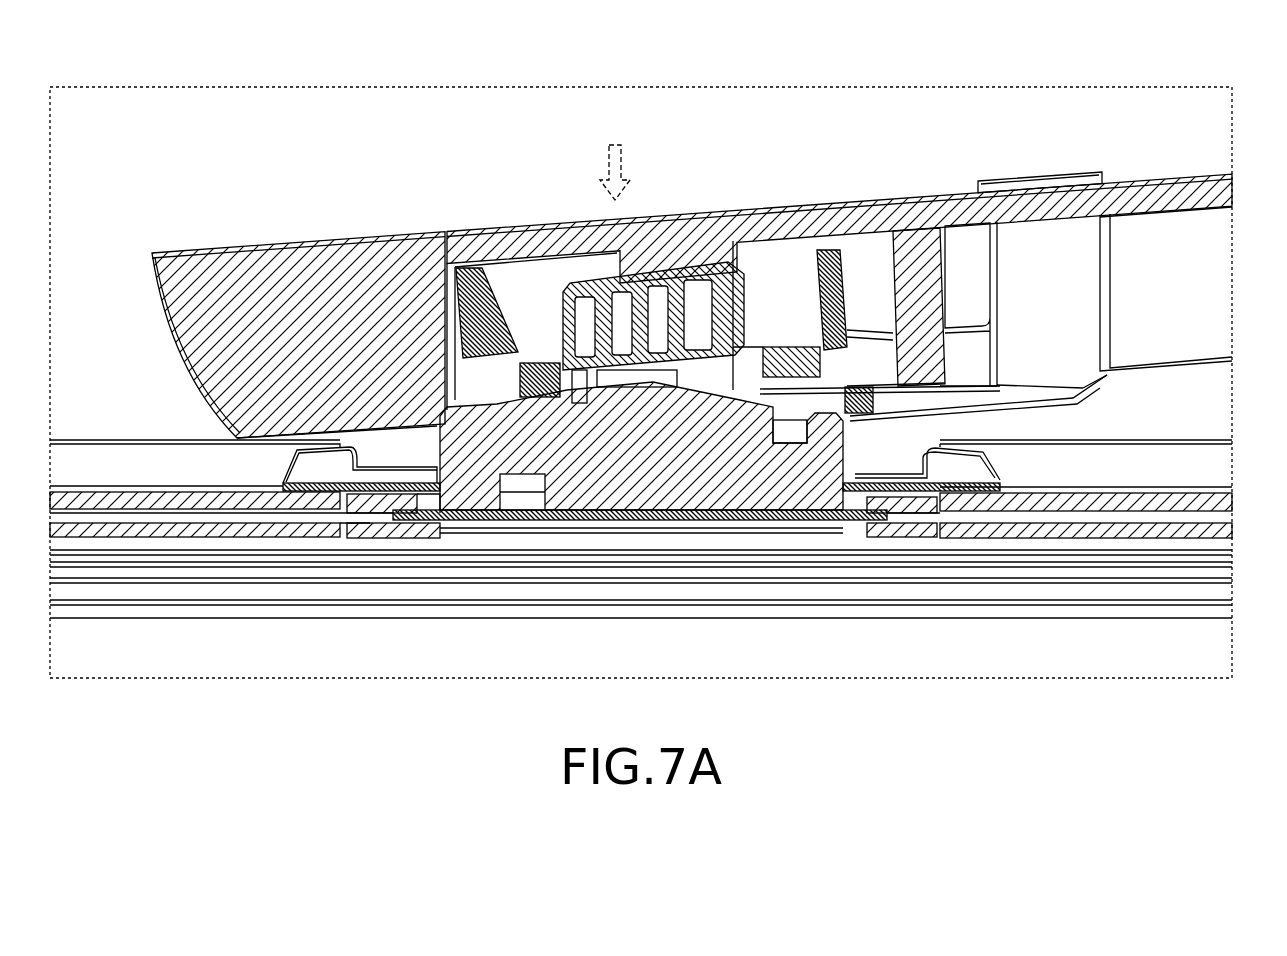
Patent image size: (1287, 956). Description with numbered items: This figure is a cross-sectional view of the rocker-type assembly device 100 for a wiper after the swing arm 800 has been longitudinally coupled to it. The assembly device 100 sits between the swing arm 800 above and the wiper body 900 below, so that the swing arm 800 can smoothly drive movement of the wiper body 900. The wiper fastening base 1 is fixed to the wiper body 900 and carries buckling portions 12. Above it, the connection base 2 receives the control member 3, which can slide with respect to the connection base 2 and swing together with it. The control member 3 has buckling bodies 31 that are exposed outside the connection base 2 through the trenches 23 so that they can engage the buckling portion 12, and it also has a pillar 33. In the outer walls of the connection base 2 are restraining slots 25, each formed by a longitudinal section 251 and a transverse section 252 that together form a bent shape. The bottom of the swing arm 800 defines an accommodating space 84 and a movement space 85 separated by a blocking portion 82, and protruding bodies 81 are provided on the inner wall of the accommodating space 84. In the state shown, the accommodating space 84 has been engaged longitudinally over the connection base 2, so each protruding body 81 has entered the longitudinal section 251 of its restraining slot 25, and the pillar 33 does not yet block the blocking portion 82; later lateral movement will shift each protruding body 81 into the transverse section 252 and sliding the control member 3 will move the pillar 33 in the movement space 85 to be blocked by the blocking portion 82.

The swing arm 800 is at (256, 232).
The restraining slot 25 is at (453, 165).
The longitudinal section 251 is at (470, 268).
The transverse section 252 is at (500, 373).
The connection base 2 is at (513, 316).
The trench 23 is at (805, 395).
The accommodating space 84 is at (866, 250).
The blocking portion 82 is at (912, 270).
The movement space 85 is at (1174, 222).
The control member 3 is at (1120, 282).
The pillar 33 is at (1097, 297).
The rocker-type assembly device 100 is at (1120, 400).
The buckling body 31 is at (870, 405).
The wiper body 900 is at (337, 600).
The wiper fastening base 1 is at (467, 520).
The protruding body 81 is at (545, 375).
The buckling portion 12 is at (790, 437).